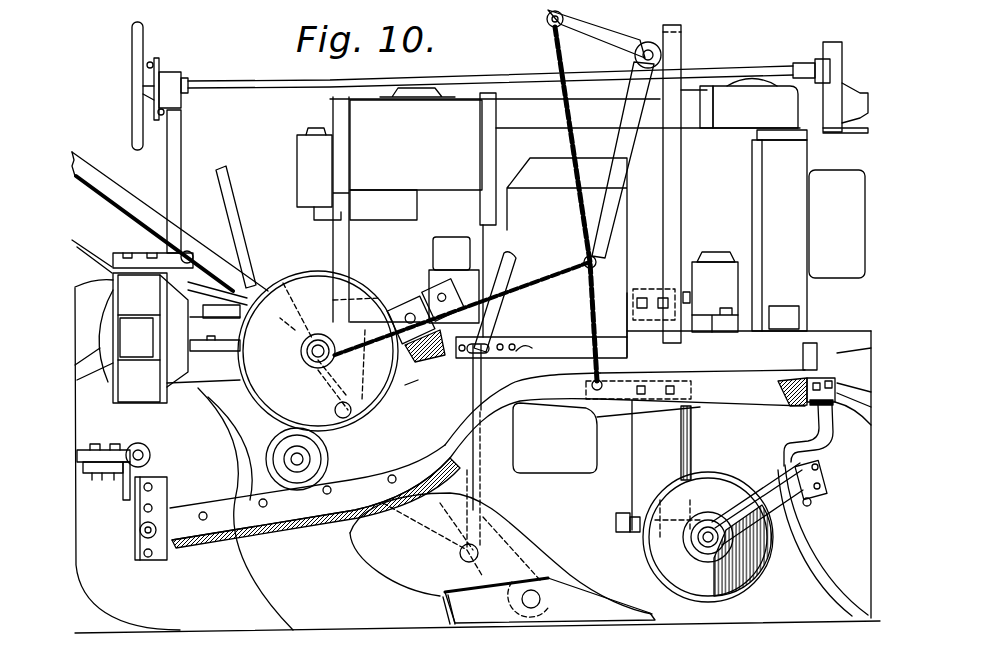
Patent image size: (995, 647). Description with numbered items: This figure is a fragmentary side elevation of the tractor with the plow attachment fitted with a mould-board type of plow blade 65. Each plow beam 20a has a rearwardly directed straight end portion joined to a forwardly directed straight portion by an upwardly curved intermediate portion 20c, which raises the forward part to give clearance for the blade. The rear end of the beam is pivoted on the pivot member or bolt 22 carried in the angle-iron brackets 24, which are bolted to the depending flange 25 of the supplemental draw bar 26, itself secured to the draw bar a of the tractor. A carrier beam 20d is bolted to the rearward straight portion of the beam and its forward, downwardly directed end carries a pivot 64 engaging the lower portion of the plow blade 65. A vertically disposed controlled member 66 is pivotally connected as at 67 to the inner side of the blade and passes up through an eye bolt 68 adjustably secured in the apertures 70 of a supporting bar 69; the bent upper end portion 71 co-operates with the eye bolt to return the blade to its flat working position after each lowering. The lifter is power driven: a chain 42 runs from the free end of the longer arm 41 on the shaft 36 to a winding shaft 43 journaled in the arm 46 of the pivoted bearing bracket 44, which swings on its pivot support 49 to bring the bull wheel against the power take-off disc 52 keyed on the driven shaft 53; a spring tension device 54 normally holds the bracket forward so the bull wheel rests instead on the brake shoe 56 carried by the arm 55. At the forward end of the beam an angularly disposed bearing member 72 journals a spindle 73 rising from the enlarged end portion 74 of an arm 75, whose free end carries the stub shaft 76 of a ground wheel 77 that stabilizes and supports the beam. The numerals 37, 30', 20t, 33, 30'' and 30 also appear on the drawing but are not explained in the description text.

The lever arm 37 is at (600, 38).
The shaft 36 is at (664, 54).
The longer arm 41 is at (615, 198).
The flexible member or chain 42 is at (505, 296).
The bracket on frame bar 30' is at (620, 388).
The top frame bar 20t is at (722, 393).
The intermediate curved portion 20c is at (470, 466).
The plow blade 65 is at (588, 606).
The pivotal connection 67 is at (478, 552).
The pivot 64 is at (540, 599).
The plow beam 20a is at (292, 505).
The carrier beam 20d is at (326, 512).
The pivot member or bolt 22 is at (157, 505).
The brackets 24 is at (152, 486).
The depending flange 25 is at (144, 470).
The draw bar of the tractor a is at (104, 452).
The supplemental draw bar 26 is at (130, 457).
The angularly extending arm 46 is at (292, 343).
The winding shaft 43 is at (313, 357).
The tension device 54 is at (379, 343).
The bearing bracket 44 is at (332, 396).
The pivot member or support 49 is at (366, 411).
The power take-off disc or wheel 52 is at (333, 454).
The shaft 53 is at (322, 466).
The brake shoe 56 is at (401, 295).
The member or arm 55 is at (320, 287).
The controlled member 66 is at (470, 383).
The angularly bent portion 71 is at (505, 332).
The eye bolt 68 is at (503, 350).
The apertures 70 is at (541, 347).
The supporting bar 69 is at (559, 348).
The guard plate 33 is at (640, 479).
The stub 30'' is at (609, 521).
The rod 30 is at (749, 411).
The bearing member 72 is at (826, 402).
The spindle 73 is at (812, 420).
The enlarged end portion 74 is at (812, 500).
The ground wheel 77 is at (727, 480).
The stub shaft or spindle 76 is at (683, 547).
The angularly disposed arm 75 is at (766, 565).